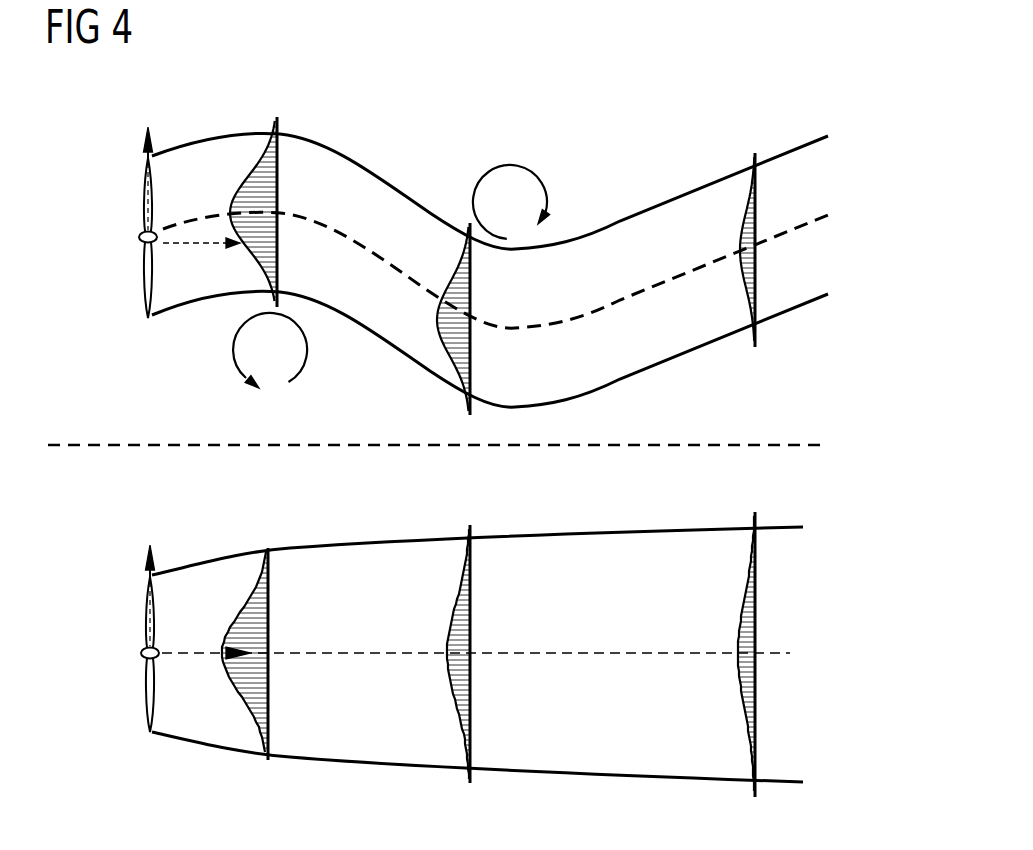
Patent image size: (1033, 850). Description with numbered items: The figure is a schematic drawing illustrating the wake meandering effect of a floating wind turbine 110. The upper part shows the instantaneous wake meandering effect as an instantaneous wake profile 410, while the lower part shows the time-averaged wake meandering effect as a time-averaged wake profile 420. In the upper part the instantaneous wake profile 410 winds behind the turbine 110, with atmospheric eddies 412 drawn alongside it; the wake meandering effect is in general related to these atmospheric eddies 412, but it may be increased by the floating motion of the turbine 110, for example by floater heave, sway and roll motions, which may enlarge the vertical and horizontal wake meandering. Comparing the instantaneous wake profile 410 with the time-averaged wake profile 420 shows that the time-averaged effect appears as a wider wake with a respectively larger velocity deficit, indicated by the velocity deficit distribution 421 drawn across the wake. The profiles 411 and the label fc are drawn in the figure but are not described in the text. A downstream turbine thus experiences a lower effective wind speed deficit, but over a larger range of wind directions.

The floating wind turbine 110 is at (104, 426).
The instantaneous wake profile 410 is at (723, 153).
The wake velocity deficit profile 411 is at (278, 175).
The atmospheric eddies 412 is at (233, 350).
The time-averaged wake profile 420 is at (703, 512).
The velocity deficit distribution 421 is at (272, 602).
The wake center fc is at (128, 633).